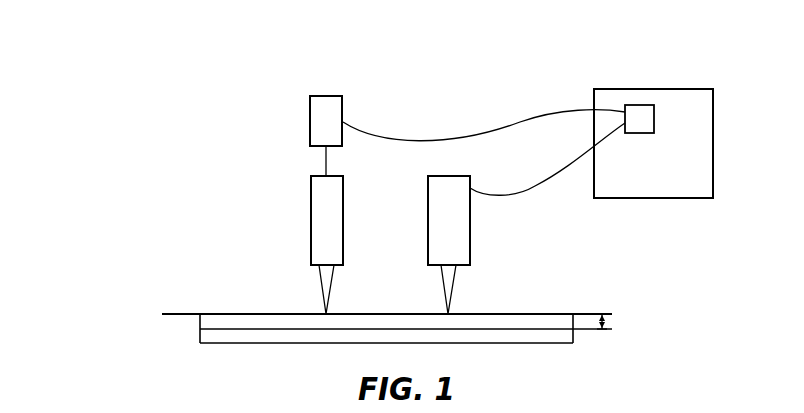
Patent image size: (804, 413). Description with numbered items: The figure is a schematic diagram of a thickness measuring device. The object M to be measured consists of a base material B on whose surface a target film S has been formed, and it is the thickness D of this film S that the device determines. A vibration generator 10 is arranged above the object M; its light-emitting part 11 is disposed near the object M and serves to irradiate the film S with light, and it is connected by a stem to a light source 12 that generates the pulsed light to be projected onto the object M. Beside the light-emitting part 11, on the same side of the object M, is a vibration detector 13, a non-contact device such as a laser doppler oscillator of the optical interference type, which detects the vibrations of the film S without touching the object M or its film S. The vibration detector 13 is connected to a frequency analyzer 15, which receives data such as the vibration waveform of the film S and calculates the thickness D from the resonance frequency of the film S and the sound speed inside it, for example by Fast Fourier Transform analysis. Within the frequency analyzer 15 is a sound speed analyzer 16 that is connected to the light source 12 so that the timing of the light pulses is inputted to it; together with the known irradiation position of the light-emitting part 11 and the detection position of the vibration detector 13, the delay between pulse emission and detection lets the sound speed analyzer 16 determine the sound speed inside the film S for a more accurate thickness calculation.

The vibration generator 10 is at (193, 122).
The light-emitting part 11 is at (298, 240).
The light source 12 is at (310, 122).
The vibration detector 13 is at (483, 228).
The frequency analyzer 15 is at (637, 89).
The sound speed analyzer 16 is at (655, 117).
The target film S is at (208, 313).
The base material B is at (205, 344).
The thickness D is at (613, 324).
The object M is at (162, 343).